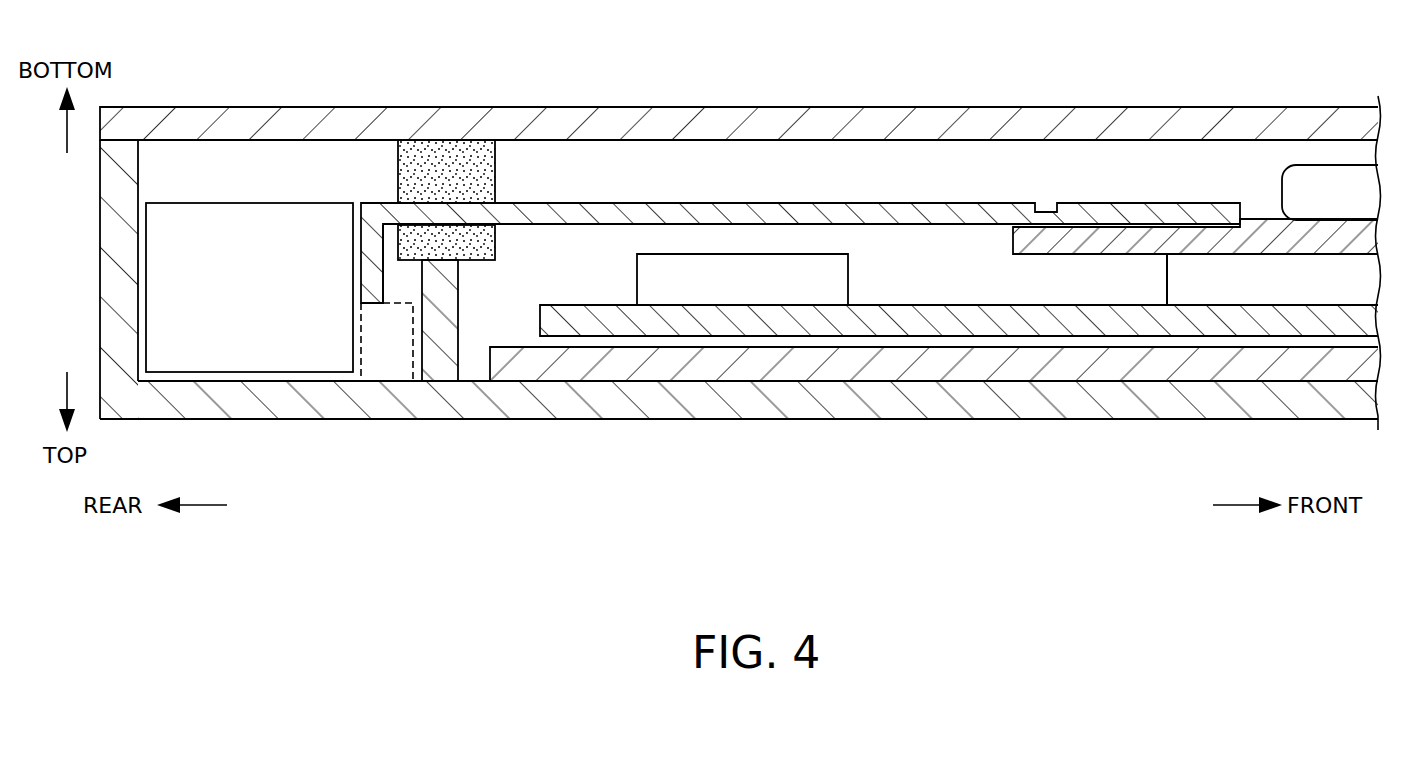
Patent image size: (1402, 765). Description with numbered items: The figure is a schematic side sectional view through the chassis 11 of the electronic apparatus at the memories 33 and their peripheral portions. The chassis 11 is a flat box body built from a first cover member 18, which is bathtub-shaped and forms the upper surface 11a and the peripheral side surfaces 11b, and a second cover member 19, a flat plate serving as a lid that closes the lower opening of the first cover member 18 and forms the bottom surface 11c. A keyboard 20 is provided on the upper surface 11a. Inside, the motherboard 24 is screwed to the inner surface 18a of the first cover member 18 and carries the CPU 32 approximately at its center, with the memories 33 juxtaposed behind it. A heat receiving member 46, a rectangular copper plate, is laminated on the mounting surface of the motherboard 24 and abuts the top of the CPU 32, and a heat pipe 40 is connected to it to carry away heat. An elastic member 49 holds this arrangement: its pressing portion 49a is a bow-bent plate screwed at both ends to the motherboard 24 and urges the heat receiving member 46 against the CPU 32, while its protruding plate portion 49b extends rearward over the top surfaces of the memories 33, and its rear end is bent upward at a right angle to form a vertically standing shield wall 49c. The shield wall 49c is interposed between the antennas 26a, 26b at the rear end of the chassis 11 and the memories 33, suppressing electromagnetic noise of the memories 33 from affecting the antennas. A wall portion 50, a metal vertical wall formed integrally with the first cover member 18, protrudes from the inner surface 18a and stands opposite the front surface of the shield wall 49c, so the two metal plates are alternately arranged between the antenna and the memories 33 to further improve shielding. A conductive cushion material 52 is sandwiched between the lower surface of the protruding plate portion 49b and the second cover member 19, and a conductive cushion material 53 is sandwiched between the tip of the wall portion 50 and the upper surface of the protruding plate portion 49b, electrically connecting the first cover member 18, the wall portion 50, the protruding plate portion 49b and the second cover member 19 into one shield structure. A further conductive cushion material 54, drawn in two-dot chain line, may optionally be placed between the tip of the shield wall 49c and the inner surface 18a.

The chassis 11 is at (128, 45).
The upper surface 11a is at (688, 421).
The peripheral side surface 11b is at (100, 262).
The bottom surface 11c is at (838, 107).
The first cover member 18 is at (934, 431).
The inner surface of first cover member 18a is at (792, 372).
The second cover member 19 is at (999, 102).
The keyboard 20 is at (925, 365).
The motherboard 24 is at (990, 325).
The antenna 26a is at (249, 216).
The antenna 26b is at (247, 237).
The CPU 32 is at (1252, 278).
The memory 33 is at (761, 270).
The heat pipe 40 is at (1333, 185).
The heat receiving member 46 is at (1122, 263).
The elastic member 49 is at (830, 265).
The pressing portion 49a is at (1190, 228).
The protruding plate portion 49b is at (917, 215).
The shield wall 49c is at (370, 272).
The wall portion 50 is at (447, 325).
The conductive cushion material 52 is at (430, 167).
The conductive cushion material 53 is at (466, 240).
The conductive cushion material 54 is at (393, 350).